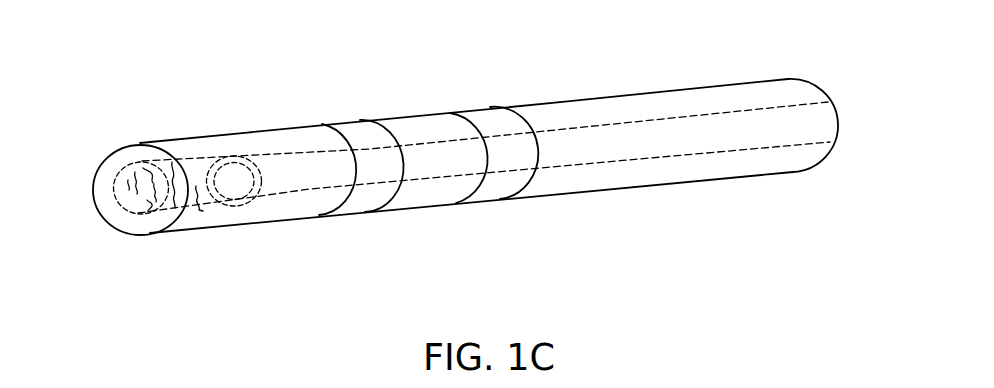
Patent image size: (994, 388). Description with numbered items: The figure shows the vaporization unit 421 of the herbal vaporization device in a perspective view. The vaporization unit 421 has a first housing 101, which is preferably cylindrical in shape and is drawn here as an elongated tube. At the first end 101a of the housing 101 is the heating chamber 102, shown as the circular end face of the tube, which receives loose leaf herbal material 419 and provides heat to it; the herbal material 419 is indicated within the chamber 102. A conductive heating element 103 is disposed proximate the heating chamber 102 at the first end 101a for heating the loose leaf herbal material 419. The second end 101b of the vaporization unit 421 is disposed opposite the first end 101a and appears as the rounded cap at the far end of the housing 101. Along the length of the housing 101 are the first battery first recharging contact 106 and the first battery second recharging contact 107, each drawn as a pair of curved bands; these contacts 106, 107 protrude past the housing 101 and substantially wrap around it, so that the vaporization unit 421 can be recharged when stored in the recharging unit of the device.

The first housing 101 is at (728, 178).
The first end 101a is at (143, 143).
The second end 101b is at (812, 80).
The heating chamber 102 is at (113, 167).
The conductive heating element 103 is at (215, 157).
The first battery first recharging contact 106 is at (362, 202).
The first battery second recharging contact 107 is at (493, 190).
The loose leaf herbal material 419 is at (160, 185).
The vaporization unit 421 is at (628, 95).